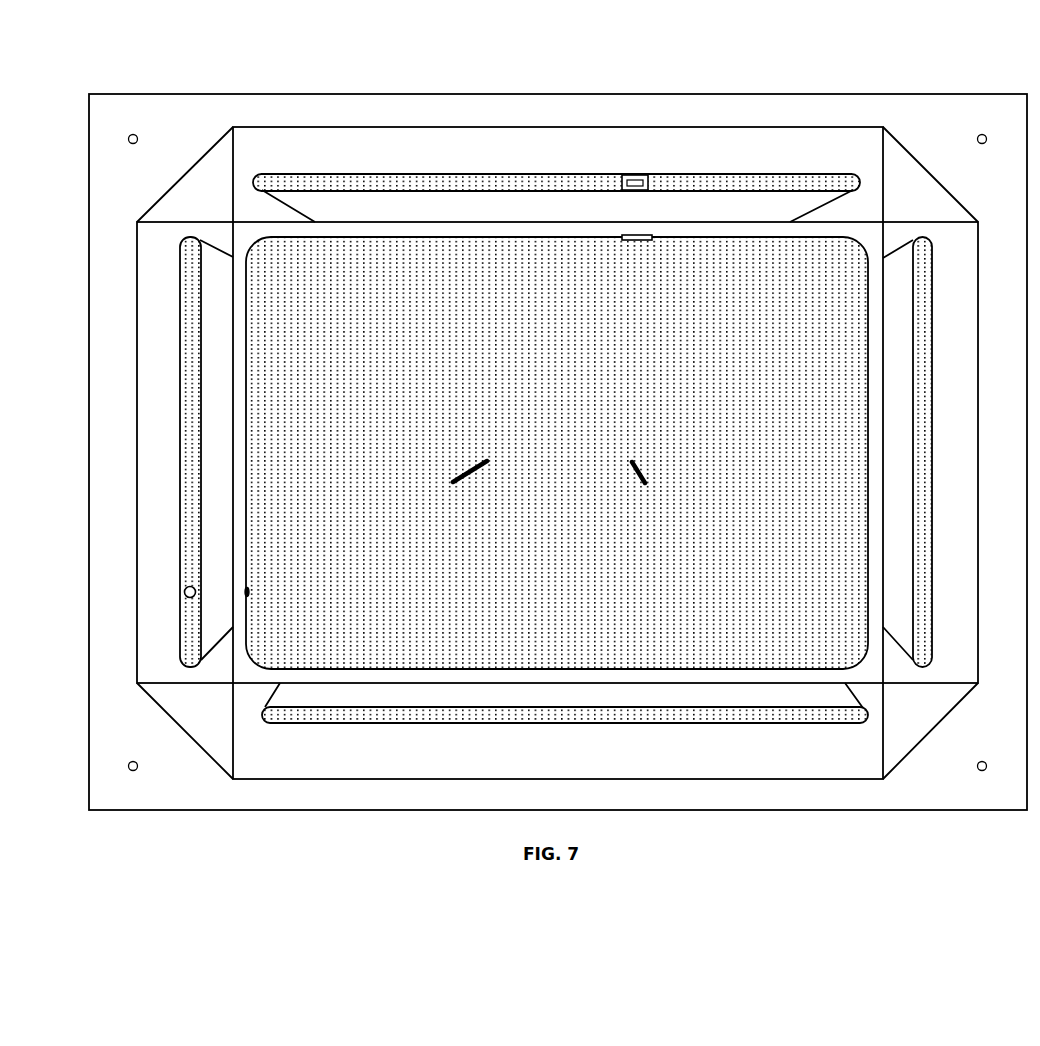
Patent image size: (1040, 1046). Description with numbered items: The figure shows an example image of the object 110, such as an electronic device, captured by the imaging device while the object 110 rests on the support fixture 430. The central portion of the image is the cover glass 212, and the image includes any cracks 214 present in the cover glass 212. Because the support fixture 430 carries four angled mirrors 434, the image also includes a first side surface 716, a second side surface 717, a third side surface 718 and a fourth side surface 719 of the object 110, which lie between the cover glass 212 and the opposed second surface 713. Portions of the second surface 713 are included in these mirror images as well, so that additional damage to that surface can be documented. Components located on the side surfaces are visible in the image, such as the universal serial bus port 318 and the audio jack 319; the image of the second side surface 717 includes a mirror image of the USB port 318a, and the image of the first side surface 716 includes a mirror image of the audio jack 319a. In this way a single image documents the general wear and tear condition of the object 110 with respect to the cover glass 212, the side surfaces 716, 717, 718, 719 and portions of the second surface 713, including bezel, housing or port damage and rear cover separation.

The support fixture 430 is at (567, 93).
The object 110 is at (858, 247).
The mirror 434 is at (520, 158).
The second surface 713 is at (442, 215).
The second side surface 717 is at (407, 173).
The fourth side surface 719 is at (742, 723).
The first side surface 716 is at (190, 352).
The third side surface 718 is at (932, 333).
The cover glass 212 is at (451, 371).
The cracks 214 is at (455, 478).
The universal serial bus (USB) port 318 is at (631, 240).
The mirror image of the USB port 318a is at (657, 173).
The audio jack 319 is at (249, 592).
The mirror image of the audio jack 319a is at (187, 600).